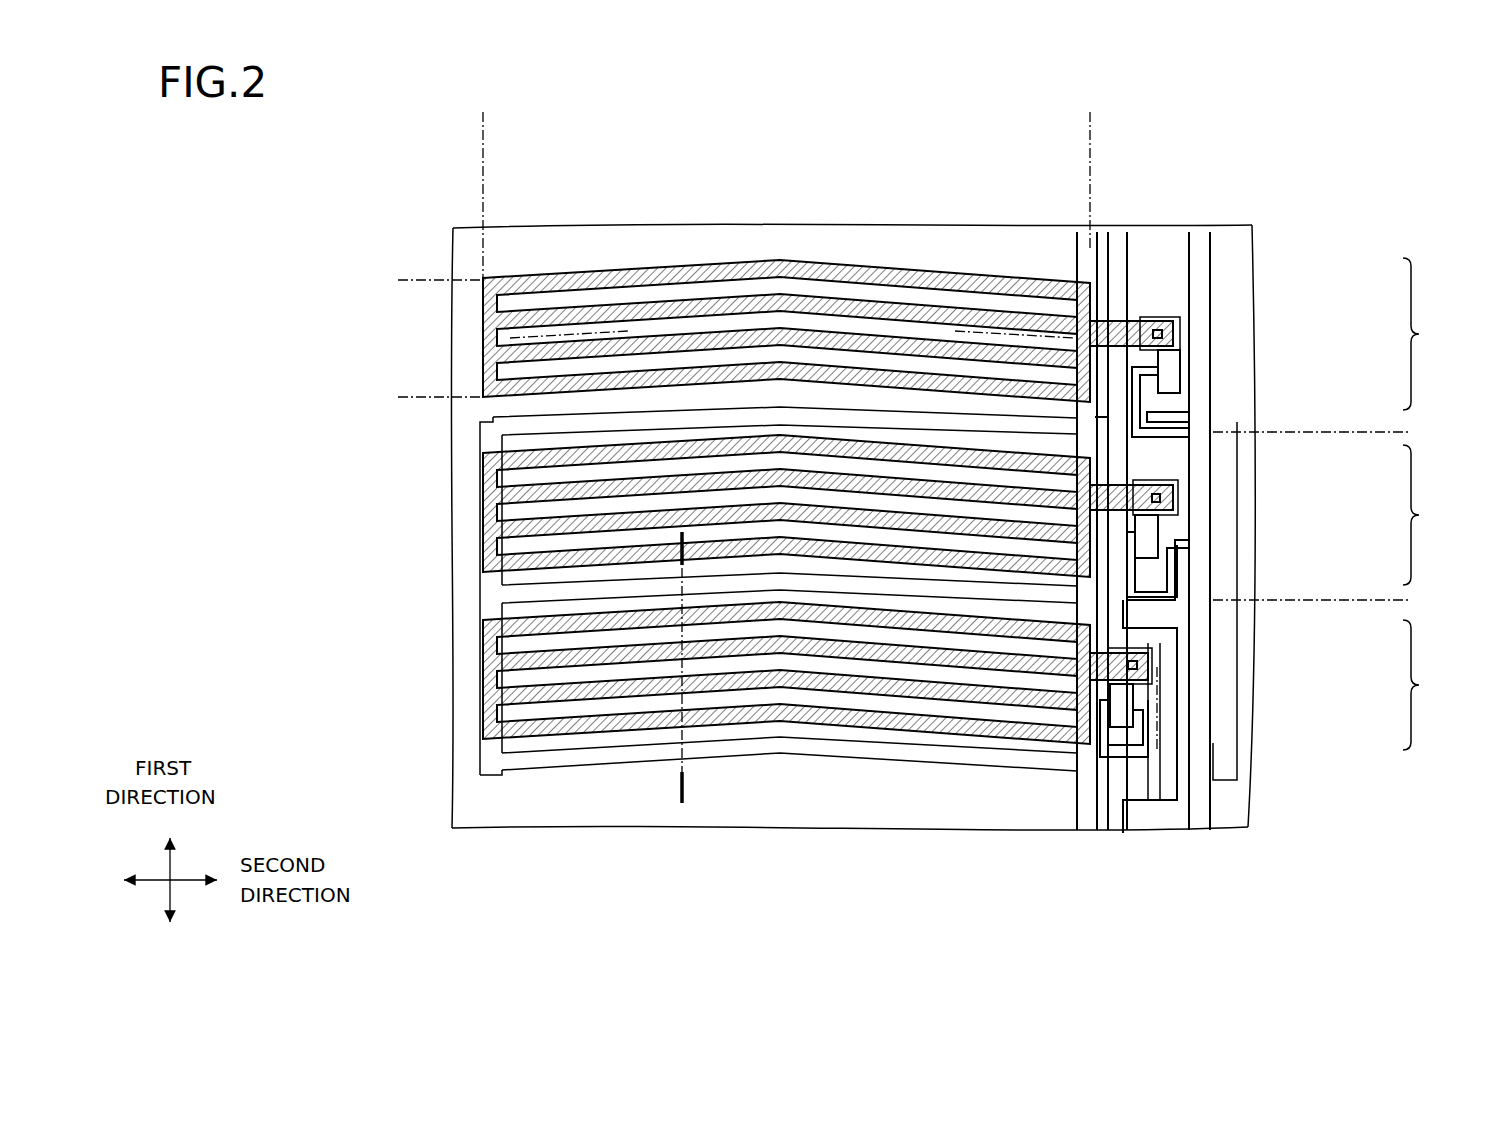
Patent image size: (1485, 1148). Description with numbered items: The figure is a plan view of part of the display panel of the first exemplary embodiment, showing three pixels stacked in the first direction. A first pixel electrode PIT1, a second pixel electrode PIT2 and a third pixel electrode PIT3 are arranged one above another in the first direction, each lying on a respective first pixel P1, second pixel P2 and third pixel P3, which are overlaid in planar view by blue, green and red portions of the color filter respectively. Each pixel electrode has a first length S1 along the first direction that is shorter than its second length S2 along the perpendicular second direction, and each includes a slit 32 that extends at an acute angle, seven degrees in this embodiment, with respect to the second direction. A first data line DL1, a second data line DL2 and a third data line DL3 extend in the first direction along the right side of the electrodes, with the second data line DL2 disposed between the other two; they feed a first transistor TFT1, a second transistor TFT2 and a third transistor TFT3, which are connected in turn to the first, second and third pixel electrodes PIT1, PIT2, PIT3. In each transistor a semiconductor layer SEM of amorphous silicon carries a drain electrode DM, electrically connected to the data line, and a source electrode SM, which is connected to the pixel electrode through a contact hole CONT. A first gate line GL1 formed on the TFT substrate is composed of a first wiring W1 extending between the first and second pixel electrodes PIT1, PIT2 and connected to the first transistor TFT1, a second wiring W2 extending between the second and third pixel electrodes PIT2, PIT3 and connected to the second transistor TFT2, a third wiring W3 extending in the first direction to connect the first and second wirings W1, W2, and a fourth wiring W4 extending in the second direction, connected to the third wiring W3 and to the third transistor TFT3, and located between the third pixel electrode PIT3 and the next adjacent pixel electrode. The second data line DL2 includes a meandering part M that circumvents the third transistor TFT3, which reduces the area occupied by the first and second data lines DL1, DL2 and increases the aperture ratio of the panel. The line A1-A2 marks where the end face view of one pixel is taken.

The first pixel electrode PIT1 is at (635, 272).
The second pixel electrode PIT2 is at (483, 506).
The third pixel electrode PIT3 is at (565, 740).
The first data line DL1 is at (1198, 235).
The second data line DL2 is at (1118, 240).
The third data line DL3 is at (1085, 245).
The first gate line GL1 is at (470, 600).
The contact hole CONT is at (1157, 325).
The source electrode SM is at (1180, 357).
The drain electrode DM is at (1172, 414).
The semiconductor layer SEM is at (1170, 403).
The first transistor TFT1 is at (1218, 383).
The second transistor TFT2 is at (1190, 552).
The third transistor TFT3 is at (1150, 727).
The first pixel P1 is at (1337, 345).
The second pixel P2 is at (1337, 522).
The third pixel P3 is at (1432, 685).
The meandering part M is at (1160, 805).
The slit 32 is at (962, 700).
The first wiring W1 is at (515, 413).
The second wiring W2 is at (568, 590).
The third wiring W3 is at (1238, 752).
The fourth wiring W4 is at (800, 750).
The first length S1 is at (428, 280).
The second length S2 is at (1090, 127).
The line A1-A2 (section line end) A1 is at (678, 540).
The line A1-A2 (section line end) A2 is at (678, 793).